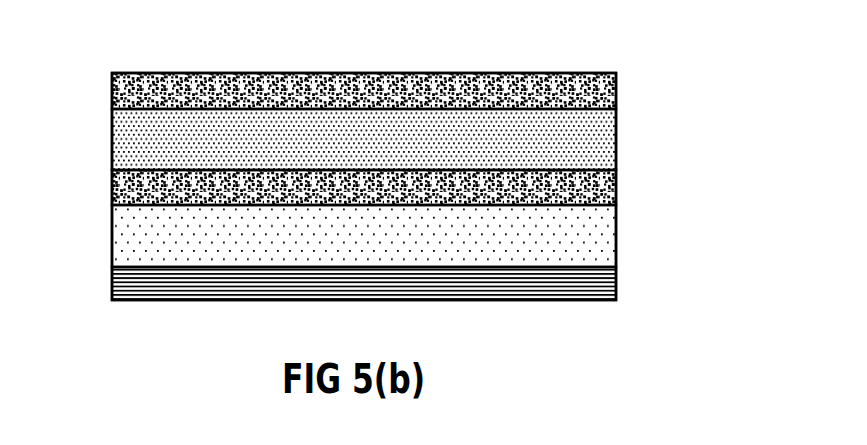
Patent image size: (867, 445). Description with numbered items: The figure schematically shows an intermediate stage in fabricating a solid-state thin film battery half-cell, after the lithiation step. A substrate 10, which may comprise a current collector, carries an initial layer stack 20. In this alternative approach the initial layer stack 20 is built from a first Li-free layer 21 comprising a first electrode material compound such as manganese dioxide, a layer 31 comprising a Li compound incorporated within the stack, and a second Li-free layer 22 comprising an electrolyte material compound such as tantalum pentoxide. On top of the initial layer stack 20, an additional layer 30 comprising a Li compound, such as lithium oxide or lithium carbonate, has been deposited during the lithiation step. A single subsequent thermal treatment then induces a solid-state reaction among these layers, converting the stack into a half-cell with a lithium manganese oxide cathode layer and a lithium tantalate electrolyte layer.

The substrate 10 is at (616, 285).
The initial layer stack 20 is at (386, 190).
The first Li-free layer 21 is at (616, 235).
The second Li-free layer 22 is at (616, 140).
The layer comprising a Li compound 30 is at (616, 90).
The layer comprising a Li compound 31 is at (616, 188).